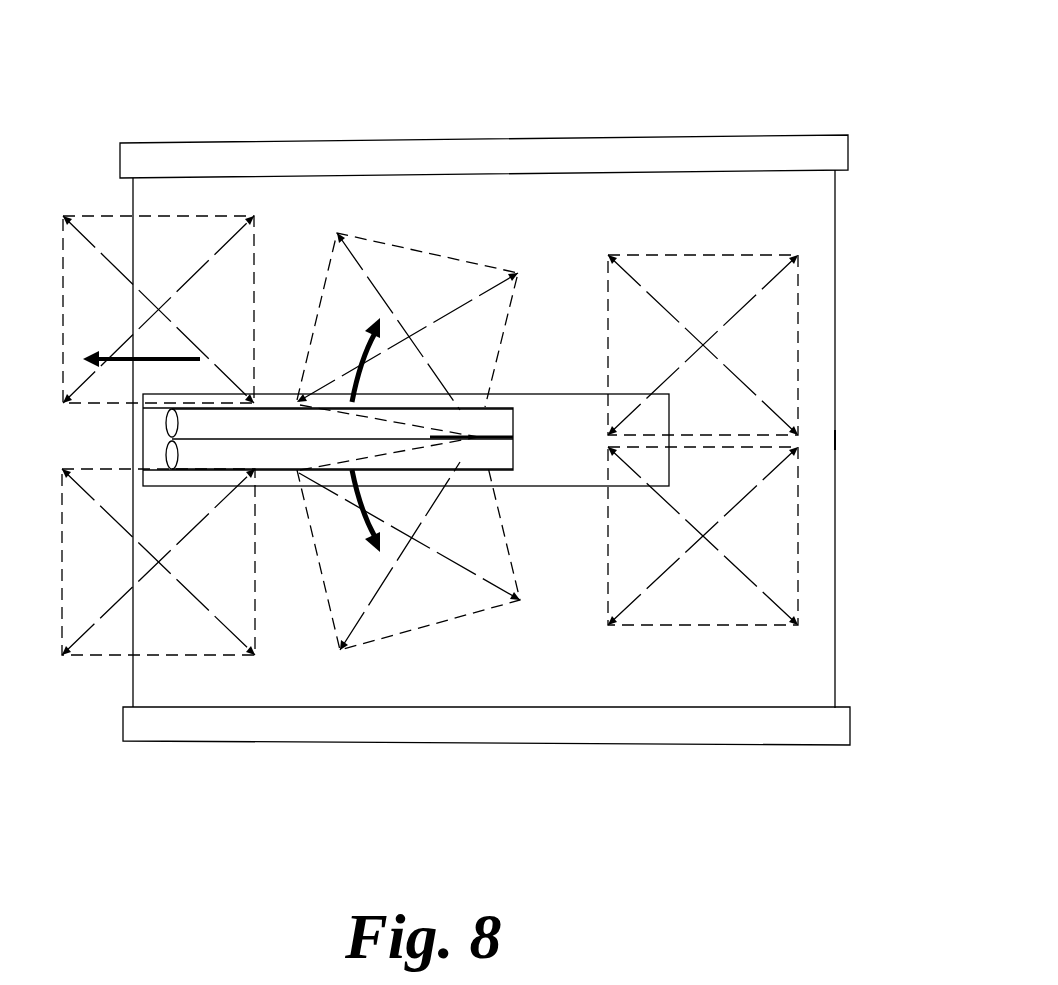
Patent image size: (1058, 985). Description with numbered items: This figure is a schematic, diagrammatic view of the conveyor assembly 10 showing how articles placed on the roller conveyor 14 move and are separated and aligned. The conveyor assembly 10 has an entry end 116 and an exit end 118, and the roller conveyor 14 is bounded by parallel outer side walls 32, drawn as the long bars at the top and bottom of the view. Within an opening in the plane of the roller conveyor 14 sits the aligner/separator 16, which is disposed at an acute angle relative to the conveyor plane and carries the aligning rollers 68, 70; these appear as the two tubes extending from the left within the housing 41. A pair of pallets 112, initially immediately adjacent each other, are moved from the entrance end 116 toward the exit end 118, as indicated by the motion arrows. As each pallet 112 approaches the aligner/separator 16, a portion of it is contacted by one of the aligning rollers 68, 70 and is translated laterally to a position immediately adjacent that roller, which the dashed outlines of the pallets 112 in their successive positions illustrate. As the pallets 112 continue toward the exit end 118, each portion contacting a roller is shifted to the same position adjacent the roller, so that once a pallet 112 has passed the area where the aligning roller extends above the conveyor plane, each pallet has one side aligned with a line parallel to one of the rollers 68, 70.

The conveyor assembly 10 is at (724, 93).
The roller conveyor 14 is at (838, 251).
The aligner/separator 16 is at (513, 437).
The outer side walls 32 is at (567, 139).
The nozzle housing 41 is at (554, 490).
The aligning roller 68 is at (282, 453).
The aligning roller 70 is at (272, 420).
The pallets 112 is at (203, 216).
The entry end 116 is at (840, 441).
The exit end 118 is at (118, 548).